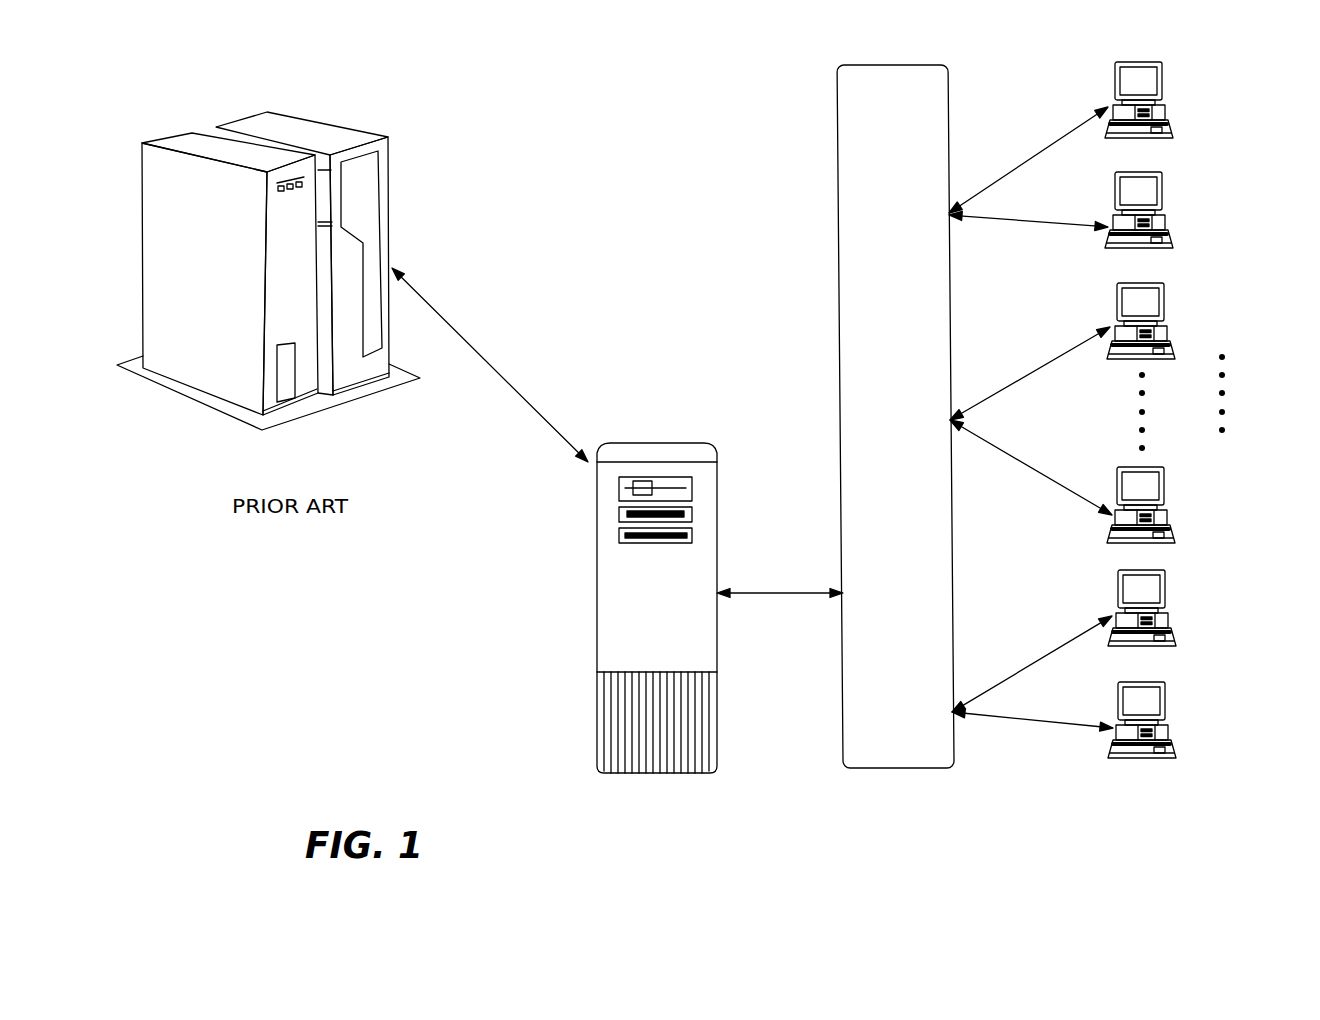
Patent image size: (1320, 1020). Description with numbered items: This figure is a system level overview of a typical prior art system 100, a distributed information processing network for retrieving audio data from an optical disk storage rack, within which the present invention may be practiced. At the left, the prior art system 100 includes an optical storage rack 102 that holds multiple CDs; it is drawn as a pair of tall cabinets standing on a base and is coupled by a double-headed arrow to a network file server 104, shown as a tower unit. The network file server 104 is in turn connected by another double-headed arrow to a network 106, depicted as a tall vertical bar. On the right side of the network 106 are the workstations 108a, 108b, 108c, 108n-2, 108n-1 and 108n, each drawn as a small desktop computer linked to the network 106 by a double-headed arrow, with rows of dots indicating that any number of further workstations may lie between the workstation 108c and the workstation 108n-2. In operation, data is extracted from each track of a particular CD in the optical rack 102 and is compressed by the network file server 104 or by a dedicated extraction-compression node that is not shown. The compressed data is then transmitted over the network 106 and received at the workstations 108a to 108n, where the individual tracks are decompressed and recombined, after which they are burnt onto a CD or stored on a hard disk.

The prior art system 100 is at (583, 180).
The optical storage rack 102 is at (390, 212).
The network file server 104 is at (597, 728).
The network 106 is at (842, 728).
The workstation 108a is at (1165, 113).
The workstation 108b is at (1167, 221).
The workstation 108c is at (1168, 333).
The workstation 108n-2 is at (1170, 514).
The workstation 108n-1 is at (1170, 622).
The workstation 108n is at (1172, 730).